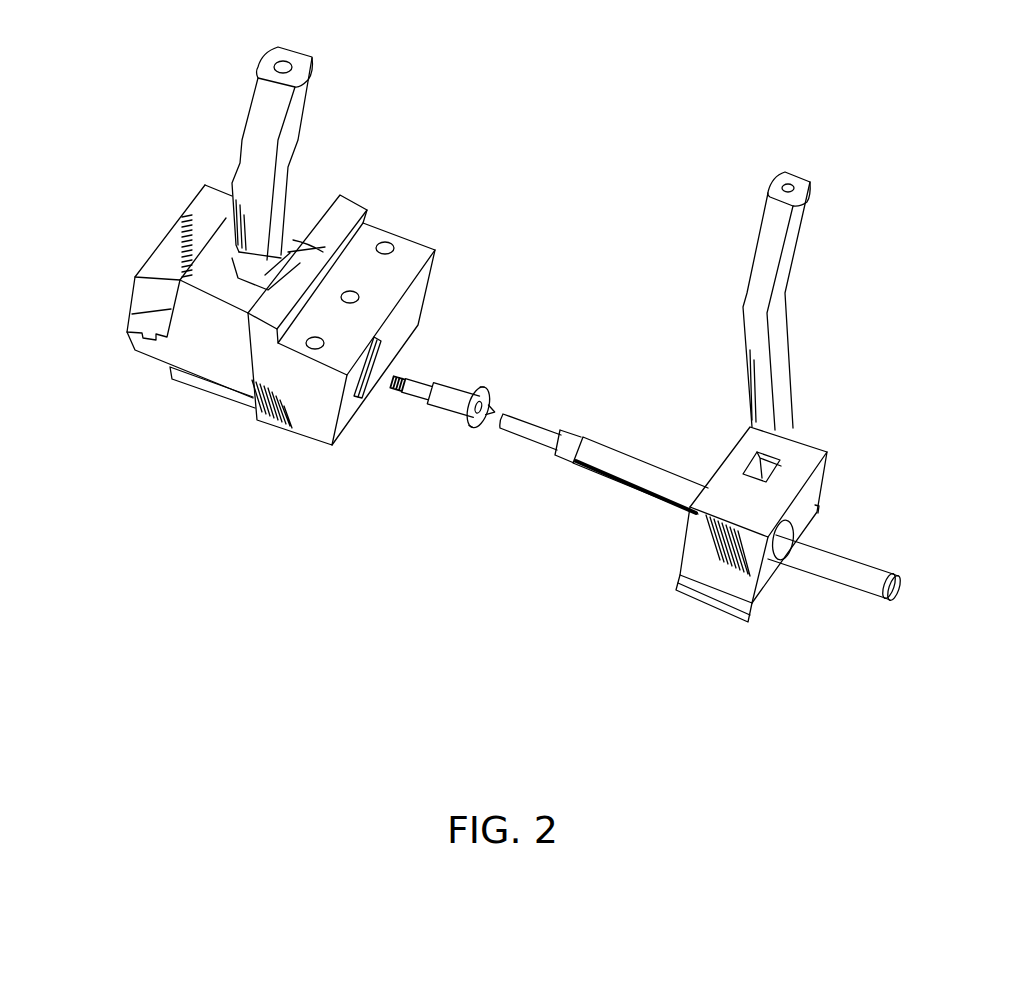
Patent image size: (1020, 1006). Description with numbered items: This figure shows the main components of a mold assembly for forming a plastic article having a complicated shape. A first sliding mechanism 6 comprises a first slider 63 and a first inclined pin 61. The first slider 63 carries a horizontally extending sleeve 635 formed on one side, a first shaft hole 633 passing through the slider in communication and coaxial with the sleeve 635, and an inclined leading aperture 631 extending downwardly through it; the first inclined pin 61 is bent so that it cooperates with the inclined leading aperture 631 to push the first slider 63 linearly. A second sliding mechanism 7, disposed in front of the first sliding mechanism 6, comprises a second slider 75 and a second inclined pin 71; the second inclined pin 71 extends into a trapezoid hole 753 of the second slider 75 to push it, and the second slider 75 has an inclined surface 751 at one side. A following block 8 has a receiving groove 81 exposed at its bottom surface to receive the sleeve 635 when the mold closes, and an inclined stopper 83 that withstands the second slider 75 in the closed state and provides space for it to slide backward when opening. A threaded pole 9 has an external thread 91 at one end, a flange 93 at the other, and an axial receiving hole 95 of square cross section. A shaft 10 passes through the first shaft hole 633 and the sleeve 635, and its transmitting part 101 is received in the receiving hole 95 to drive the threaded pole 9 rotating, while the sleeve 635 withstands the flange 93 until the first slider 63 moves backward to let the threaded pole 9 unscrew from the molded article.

The first sliding mechanism 6 is at (880, 384).
The first inclined pin 61 is at (764, 268).
The first slider 63 is at (797, 460).
The inclined leading aperture 631 is at (761, 464).
The first shaft hole 633 is at (787, 515).
The sleeve 635 is at (627, 477).
The second sliding mechanism 7 is at (153, 42).
The second inclined pin 71 is at (258, 128).
The second slider 75 is at (193, 288).
The inclined surface 751 is at (250, 353).
The trapezoid hole 753 is at (310, 236).
The following block 8 is at (300, 410).
The receiving groove 81 is at (368, 365).
The inclined stopper 83 is at (253, 398).
The threaded pole 9 is at (467, 408).
The external thread 91 is at (402, 377).
The flange 93 is at (490, 395).
The receiving hole 95 is at (495, 412).
The shaft 10 is at (832, 560).
The transmitting part 101 is at (537, 445).